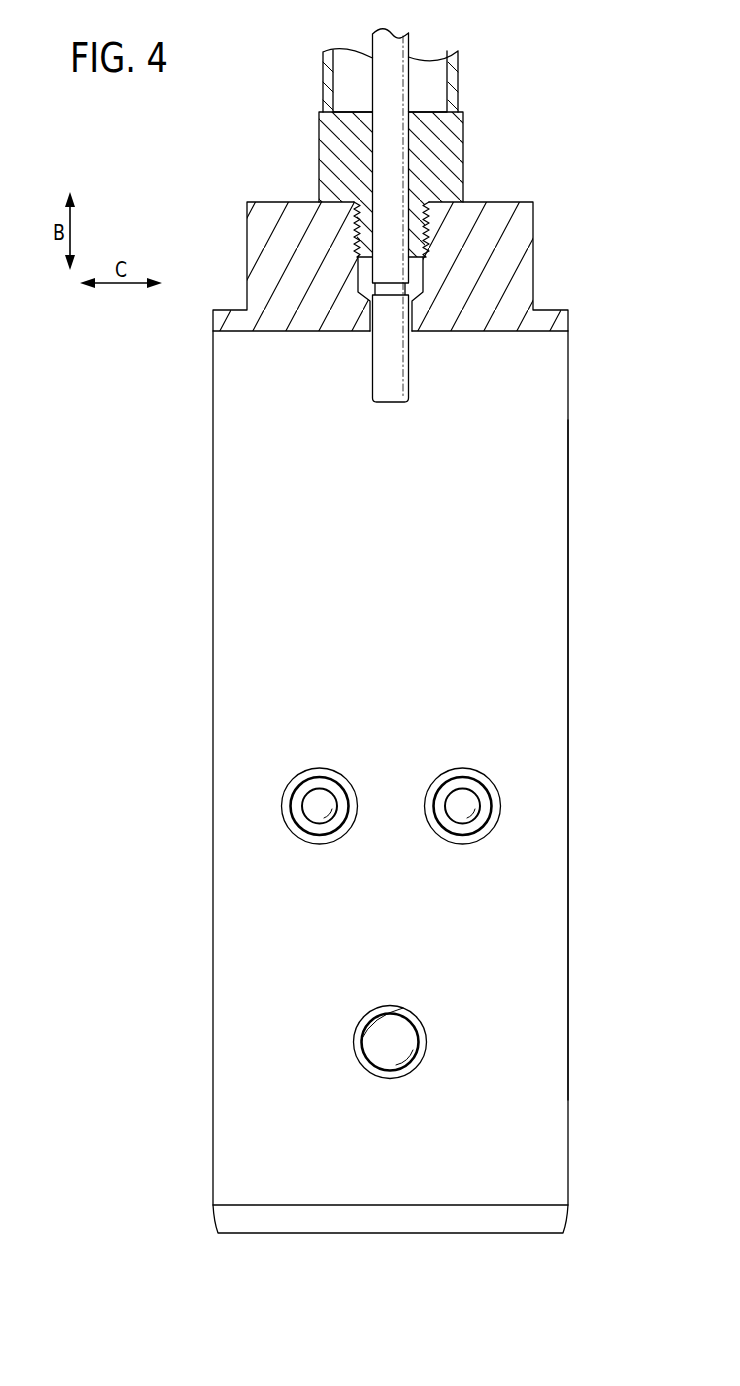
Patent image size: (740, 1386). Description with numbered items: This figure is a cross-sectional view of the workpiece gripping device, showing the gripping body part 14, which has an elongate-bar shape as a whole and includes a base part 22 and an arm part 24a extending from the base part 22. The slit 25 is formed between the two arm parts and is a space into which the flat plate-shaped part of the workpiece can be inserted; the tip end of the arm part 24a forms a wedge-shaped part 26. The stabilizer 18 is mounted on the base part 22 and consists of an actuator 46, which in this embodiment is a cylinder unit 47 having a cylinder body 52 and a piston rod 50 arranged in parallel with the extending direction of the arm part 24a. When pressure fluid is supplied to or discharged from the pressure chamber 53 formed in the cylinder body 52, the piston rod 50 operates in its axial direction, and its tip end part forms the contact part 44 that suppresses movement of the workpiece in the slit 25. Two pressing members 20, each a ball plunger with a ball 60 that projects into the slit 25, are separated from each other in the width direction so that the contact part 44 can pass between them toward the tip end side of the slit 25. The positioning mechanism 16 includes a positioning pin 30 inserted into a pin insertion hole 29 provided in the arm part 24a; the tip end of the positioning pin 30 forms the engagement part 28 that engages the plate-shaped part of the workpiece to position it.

The gripping body part 14 is at (379, 809).
The positioning mechanism 16 is at (395, 1064).
The stabilizer 18 is at (408, 149).
The pressing member 20 is at (392, 799).
The base part 22 is at (523, 260).
The arm part 24a is at (567, 552).
The slit 25 is at (530, 610).
The wedge-shaped part 26 is at (293, 1218).
The engagement part 28 is at (396, 1070).
The positioning pin 30 is at (385, 1057).
The pin insertion hole 29 is at (365, 1035).
The contact part 44 is at (392, 392).
The actuator 46 is at (443, 172).
The cylinder unit 47 is at (461, 102).
The piston rod 50 is at (362, 237).
The cylinder body 52 is at (457, 73).
The pressure chamber 53 is at (348, 85).
The ball 60 is at (322, 812).